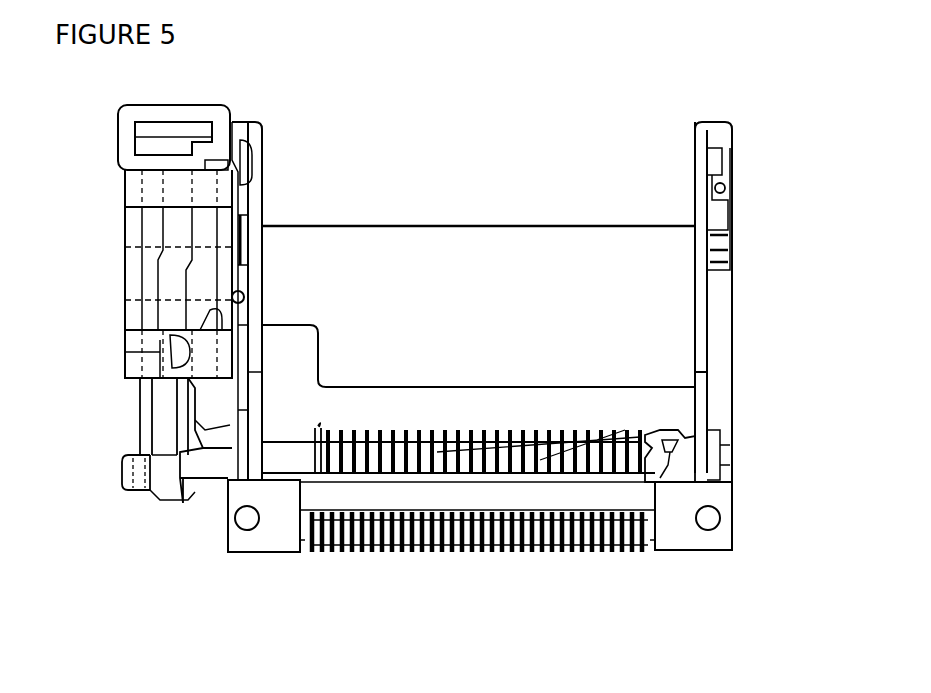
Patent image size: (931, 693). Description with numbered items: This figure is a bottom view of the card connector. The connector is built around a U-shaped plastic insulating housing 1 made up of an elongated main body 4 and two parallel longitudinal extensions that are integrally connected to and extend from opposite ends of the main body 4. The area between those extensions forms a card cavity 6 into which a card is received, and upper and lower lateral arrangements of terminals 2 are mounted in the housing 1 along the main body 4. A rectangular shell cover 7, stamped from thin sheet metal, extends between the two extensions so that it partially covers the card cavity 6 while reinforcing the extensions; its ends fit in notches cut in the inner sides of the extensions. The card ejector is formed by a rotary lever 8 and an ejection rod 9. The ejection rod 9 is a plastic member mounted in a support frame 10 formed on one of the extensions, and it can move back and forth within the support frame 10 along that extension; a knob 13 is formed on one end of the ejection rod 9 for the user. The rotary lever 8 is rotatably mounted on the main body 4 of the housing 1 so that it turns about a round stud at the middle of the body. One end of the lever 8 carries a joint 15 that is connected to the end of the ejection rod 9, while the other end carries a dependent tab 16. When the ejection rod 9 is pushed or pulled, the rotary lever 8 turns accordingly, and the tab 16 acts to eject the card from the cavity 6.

The insulating housing 1 is at (734, 397).
The terminals 2 is at (634, 472).
The main body 4 is at (658, 540).
The card cavity 6 is at (608, 198).
The shell cover 7 is at (408, 252).
The rotary lever 8 is at (208, 490).
The ejection rod 9 is at (138, 404).
The support frame 10 is at (127, 247).
The knob 13 is at (118, 123).
The joint 15 is at (160, 466).
The dependent tab 16 is at (660, 437).